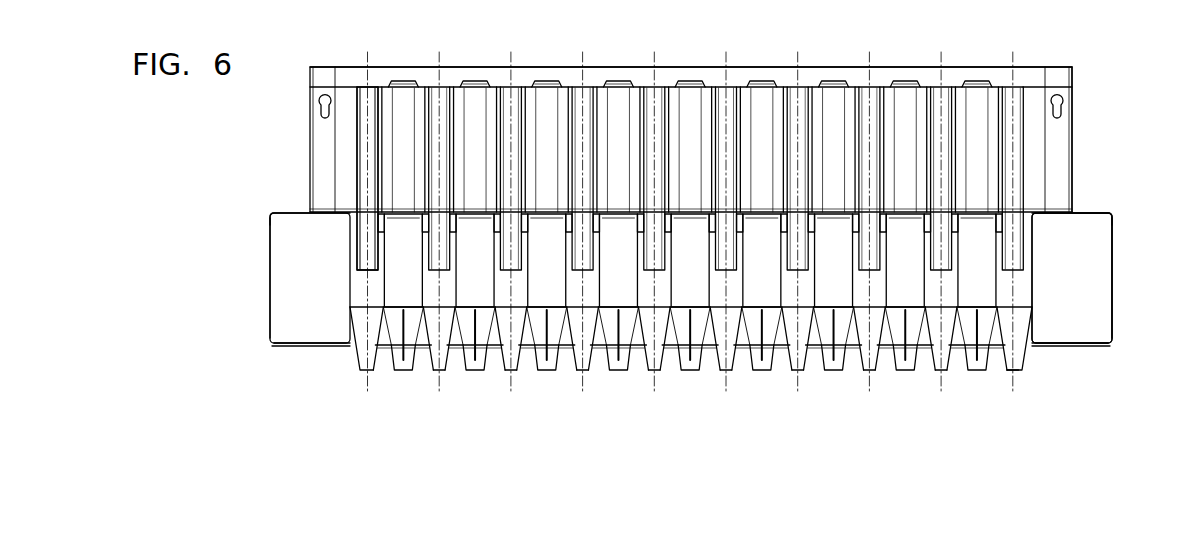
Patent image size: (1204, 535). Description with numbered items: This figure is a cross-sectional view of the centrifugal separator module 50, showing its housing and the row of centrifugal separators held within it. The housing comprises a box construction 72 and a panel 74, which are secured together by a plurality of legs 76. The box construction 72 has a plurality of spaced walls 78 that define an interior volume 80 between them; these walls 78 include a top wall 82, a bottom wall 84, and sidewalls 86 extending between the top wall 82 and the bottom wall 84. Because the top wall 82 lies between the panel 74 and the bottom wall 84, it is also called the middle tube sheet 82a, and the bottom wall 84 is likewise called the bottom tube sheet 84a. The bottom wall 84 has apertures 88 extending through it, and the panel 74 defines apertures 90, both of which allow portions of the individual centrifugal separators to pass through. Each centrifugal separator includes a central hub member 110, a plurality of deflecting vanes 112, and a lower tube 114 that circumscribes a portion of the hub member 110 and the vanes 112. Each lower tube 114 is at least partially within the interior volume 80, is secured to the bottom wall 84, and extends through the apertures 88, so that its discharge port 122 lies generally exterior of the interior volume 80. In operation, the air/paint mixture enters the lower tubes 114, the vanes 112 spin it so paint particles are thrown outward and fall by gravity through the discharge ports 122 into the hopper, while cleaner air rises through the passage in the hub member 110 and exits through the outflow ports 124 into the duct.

The centrifugal separator module 50 is at (288, 111).
The box construction 72 is at (1113, 288).
The panel 74 is at (1037, 85).
The legs 76 is at (1073, 123).
The walls 78 is at (270, 305).
The interior volume 80 is at (1111, 307).
The top wall 82 is at (285, 212).
The middle tube sheet 82a is at (1100, 211).
The bottom wall 84 is at (300, 345).
The bottom tube sheet 84a is at (1062, 346).
The sidewalls 86 is at (270, 245).
The apertures 88 is at (933, 346).
The apertures 90 is at (358, 85).
The central hub member 110 is at (357, 148).
The deflecting vanes 112 is at (497, 232).
The lower tube 114 is at (385, 292).
The discharge port 122 is at (543, 370).
The outflow ports 124 is at (381, 86).